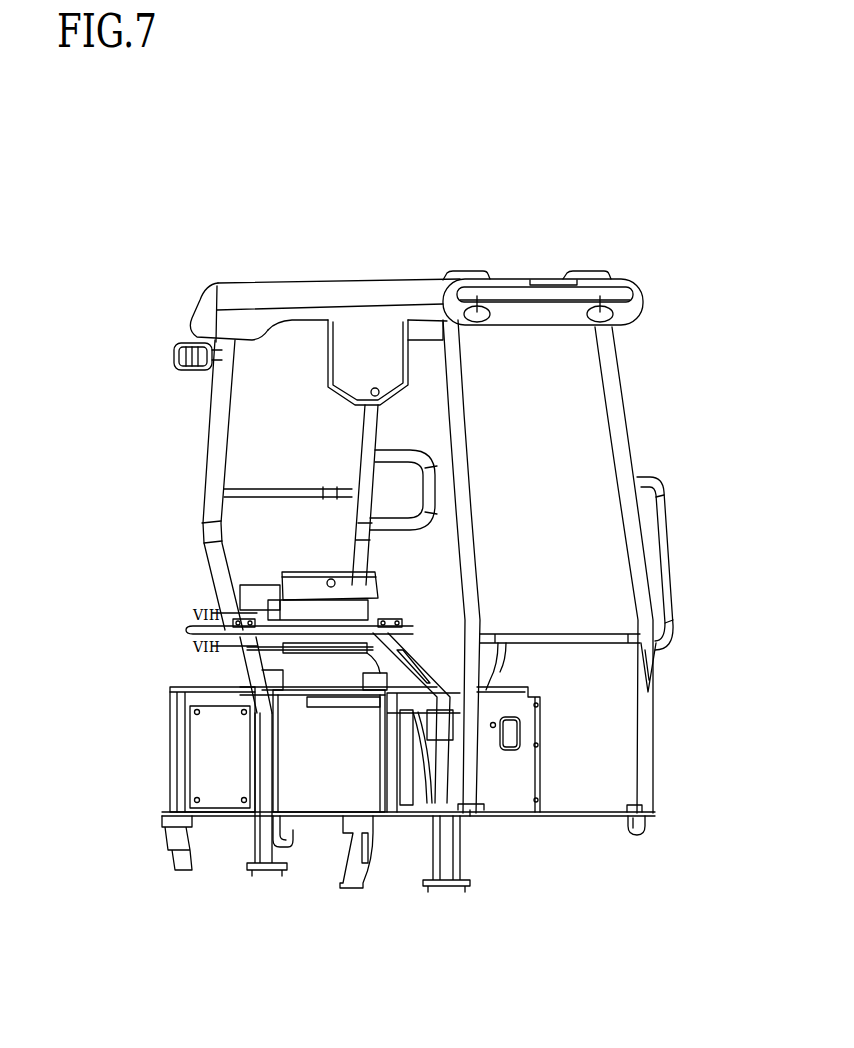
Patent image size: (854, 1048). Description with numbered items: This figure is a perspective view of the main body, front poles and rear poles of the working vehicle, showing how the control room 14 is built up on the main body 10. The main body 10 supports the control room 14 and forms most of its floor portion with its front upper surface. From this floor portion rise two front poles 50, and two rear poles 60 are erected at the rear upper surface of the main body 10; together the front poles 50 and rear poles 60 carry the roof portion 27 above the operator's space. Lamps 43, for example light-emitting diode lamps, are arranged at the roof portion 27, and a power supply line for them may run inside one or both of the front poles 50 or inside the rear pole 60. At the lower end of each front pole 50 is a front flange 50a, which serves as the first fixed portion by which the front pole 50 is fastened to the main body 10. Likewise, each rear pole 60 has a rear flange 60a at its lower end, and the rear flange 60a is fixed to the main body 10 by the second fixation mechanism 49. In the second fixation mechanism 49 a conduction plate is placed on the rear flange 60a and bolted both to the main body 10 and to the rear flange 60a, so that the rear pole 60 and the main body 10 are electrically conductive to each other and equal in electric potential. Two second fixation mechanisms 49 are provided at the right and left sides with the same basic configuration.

The main body 10 is at (172, 710).
The control room 14 is at (190, 274).
The roof portion 27 is at (363, 290).
The lamps 43 is at (482, 273).
The second fixation mechanism 49 is at (188, 624).
The front pole 50 is at (466, 450).
The front flange 50a is at (476, 811).
The rear pole 60 is at (215, 579).
The rear flange 60a is at (185, 630).